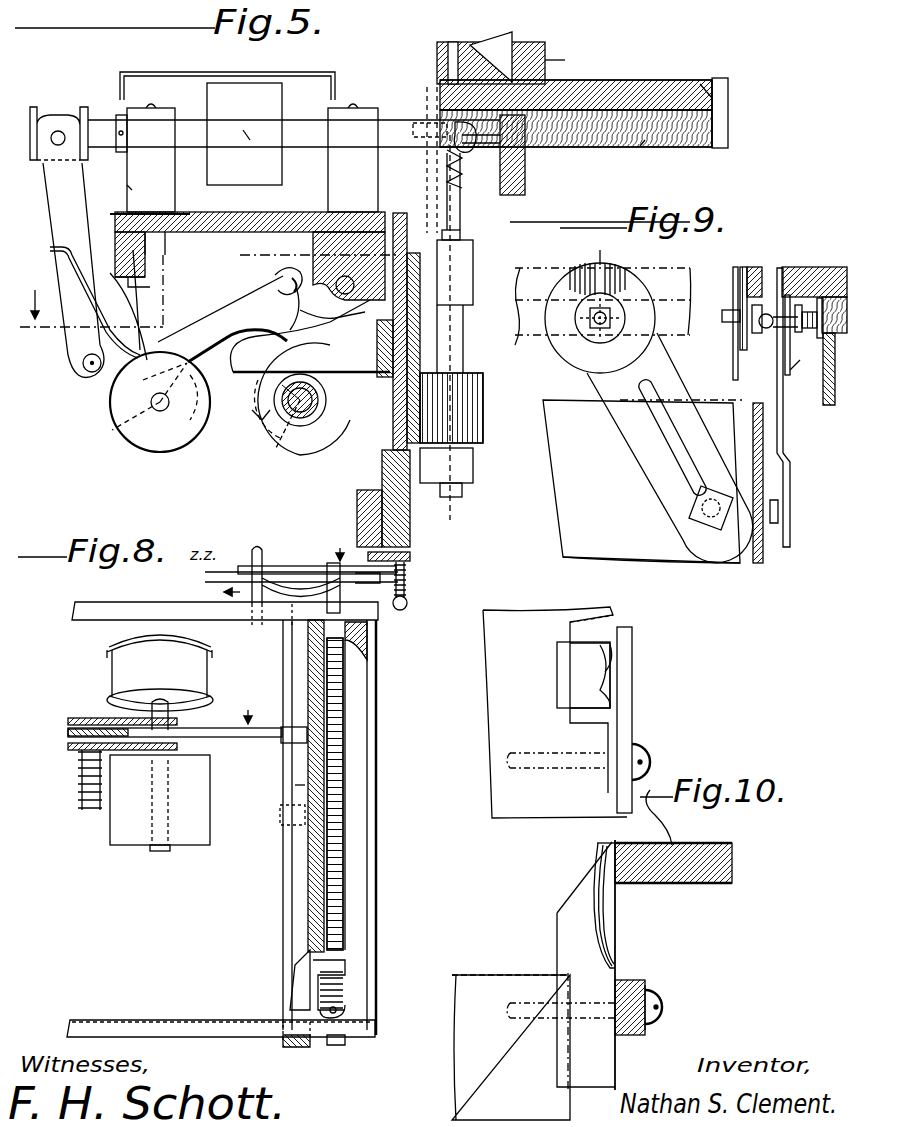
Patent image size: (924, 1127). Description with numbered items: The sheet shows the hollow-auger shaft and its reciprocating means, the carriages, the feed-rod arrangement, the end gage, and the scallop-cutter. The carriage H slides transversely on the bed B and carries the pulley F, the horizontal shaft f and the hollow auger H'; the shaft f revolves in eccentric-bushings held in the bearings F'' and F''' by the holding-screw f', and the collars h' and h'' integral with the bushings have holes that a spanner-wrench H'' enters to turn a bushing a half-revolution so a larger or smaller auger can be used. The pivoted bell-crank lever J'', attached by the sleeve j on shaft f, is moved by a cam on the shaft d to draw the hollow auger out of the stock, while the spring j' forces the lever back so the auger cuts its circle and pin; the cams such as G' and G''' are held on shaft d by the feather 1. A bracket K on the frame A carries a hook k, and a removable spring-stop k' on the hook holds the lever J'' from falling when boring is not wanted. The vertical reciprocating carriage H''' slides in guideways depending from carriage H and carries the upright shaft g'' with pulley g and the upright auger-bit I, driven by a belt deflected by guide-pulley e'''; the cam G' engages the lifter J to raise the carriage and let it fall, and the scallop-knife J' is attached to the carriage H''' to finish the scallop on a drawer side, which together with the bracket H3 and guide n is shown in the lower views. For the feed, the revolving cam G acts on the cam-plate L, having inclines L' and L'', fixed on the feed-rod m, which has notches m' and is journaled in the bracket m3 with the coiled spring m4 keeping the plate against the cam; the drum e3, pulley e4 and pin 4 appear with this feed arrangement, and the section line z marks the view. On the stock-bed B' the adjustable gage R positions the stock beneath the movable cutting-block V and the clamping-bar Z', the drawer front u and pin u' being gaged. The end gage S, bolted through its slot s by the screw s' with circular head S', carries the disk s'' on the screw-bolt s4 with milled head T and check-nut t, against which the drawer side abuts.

In FIG. 5, the spanner-wrench H'' is at (278, 246).
In FIG. 5, the shaft f is at (294, 134).
In FIG. 5, the sleeve j is at (59, 120).
In FIG. 5, the pivoted bell-crank lever J'' is at (171, 270).
In FIG. 8, the pivoted bell-crank lever J'' is at (175, 745).
In FIG. 5, the spring j' is at (100, 355).
In FIG. 8, the spring j' is at (73, 780).
In FIG. 5, the collar h'' is at (265, 362).
In FIG. 5, the collar h' is at (115, 174).
In FIG. 5, the bearing F'' is at (151, 160).
In FIG. 5, the bearing block F''' is at (353, 160).
In FIG. 5, the pulley F is at (244, 134).
In FIG. 5, the holding-screw f' is at (257, 91).
In FIG. 5, the carriage H is at (240, 240).
In FIG. 5, the bed B is at (257, 267).
In FIG. 5, the screw-nut z is at (305, 255).
In FIG. 5, the guide-pulley e''' is at (160, 402).
In FIG. 5, the removable spring-stop k' is at (277, 276).
In FIG. 8, the removable spring-stop k' is at (276, 766).
In FIG. 5, the bracket K is at (299, 270).
In FIG. 5, the feed-rod m is at (351, 278).
In FIG. 8, the feed-rod m is at (337, 794).
In FIG. 5, the hook k is at (332, 322).
In FIG. 8, the hook k is at (281, 789).
In FIG. 5, the lifter J is at (310, 336).
In FIG. 5, the cam G''' is at (301, 399).
In FIG. 5, the cam G' is at (303, 413).
In FIG. 5, the feather 1 is at (295, 392).
In FIG. 5, the shaft d is at (285, 450).
In FIG. 8, the shaft d is at (292, 620).
In FIG. 5, the projecting guide n is at (476, 470).
In FIG. 5, the upright auger-bit I is at (455, 327).
In FIG. 5, the upright shaft g'' is at (454, 427).
In FIG. 5, the pulley g is at (451, 408).
In FIG. 5, the bracket H3 is at (403, 522).
In FIG. 5, the adjustable metal gage S is at (422, 160).
In FIG. 9, the adjustable metal gage S is at (793, 407).
In FIG. 5, the milled head T is at (477, 143).
In FIG. 9, the milled head T is at (800, 366).
In FIG. 5, the hollow auger H' is at (467, 169).
In FIG. 5, the bed B' is at (595, 168).
In FIG. 5, the movable cutting-block V is at (491, 47).
In FIG. 5, the transverse clamping-bar Z' is at (563, 55).
In FIG. 5, the longitudinal adjustable gage R is at (648, 82).
In FIG. 9, the longitudinal adjustable gage R is at (600, 303).
In FIG. 5, the plate u' is at (731, 93).
In FIG. 9, the plate u' is at (681, 323).
In FIG. 10, the plate u' is at (637, 858).
In FIG. 5, the plate u is at (635, 155).
In FIG. 9, the plate u is at (602, 321).
In FIG. 9, the check-nut t is at (701, 311).
In FIG. 9, the screw-bolt s4 is at (692, 329).
In FIG. 9, the circular head S' is at (672, 415).
In FIG. 9, the disk s'' is at (708, 409).
In FIG. 9, the longitudinal slot s is at (672, 437).
In FIG. 9, the screw s' is at (703, 508).
In FIG. 9, the vertical reciprocating carriage H''' is at (660, 495).
In FIG. 10, the vertical reciprocating carriage H''' is at (539, 863).
In FIG. 8, the revolving cam G is at (284, 580).
In FIG. 8, the cam-plate L is at (317, 558).
In FIG. 8, the incline L'' is at (301, 570).
In FIG. 8, the pin 4 is at (253, 575).
In FIG. 8, the incline L' is at (353, 588).
In FIG. 8, the supporting-frame A is at (18, 626).
In FIG. 8, the notches m' is at (329, 827).
In FIG. 8, the drum e4 is at (160, 682).
In FIG. 8, the box e3 is at (160, 803).
In FIG. 8, the bracket m3 is at (347, 968).
In FIG. 8, the coiled spring m4 is at (348, 995).
In FIG. 10, the scallop-knife J' is at (579, 864).